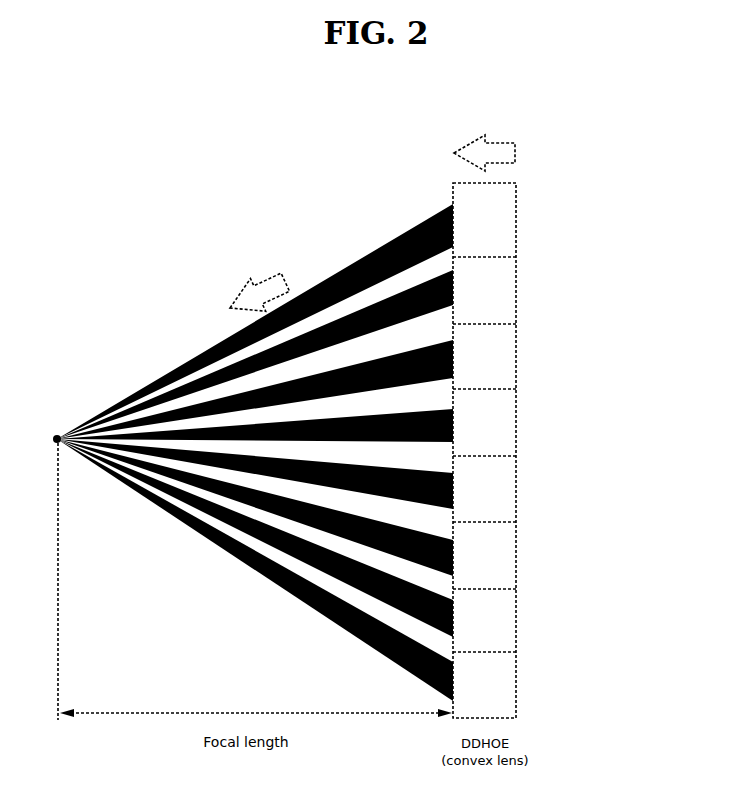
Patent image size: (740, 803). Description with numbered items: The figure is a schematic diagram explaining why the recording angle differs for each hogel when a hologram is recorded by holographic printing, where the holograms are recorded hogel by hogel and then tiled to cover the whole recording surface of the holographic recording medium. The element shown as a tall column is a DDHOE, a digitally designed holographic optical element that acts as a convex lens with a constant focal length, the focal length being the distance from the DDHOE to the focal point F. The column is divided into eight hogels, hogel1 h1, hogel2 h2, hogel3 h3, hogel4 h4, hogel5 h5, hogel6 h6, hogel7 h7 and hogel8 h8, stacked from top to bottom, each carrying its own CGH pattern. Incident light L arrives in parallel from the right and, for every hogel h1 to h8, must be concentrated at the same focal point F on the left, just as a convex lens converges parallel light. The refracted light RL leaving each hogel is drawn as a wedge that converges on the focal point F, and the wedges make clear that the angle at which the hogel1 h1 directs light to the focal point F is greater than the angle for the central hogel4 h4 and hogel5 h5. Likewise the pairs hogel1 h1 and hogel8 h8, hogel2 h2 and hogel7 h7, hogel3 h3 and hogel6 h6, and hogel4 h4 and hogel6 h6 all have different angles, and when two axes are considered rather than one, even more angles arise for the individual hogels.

The focal point F is at (49, 440).
The hogel1 h1 is at (365, 321).
The hogel2 h2 is at (365, 354).
The hogel3 h3 is at (365, 389).
The hogel4 h4 is at (365, 425).
The hogel5 h5 is at (365, 474).
The hogel6 h6 is at (365, 507).
The hogel7 h7 is at (365, 538).
The hogel8 h8 is at (365, 570).
The incident light L is at (484, 153).
The refracted light RL is at (257, 295).